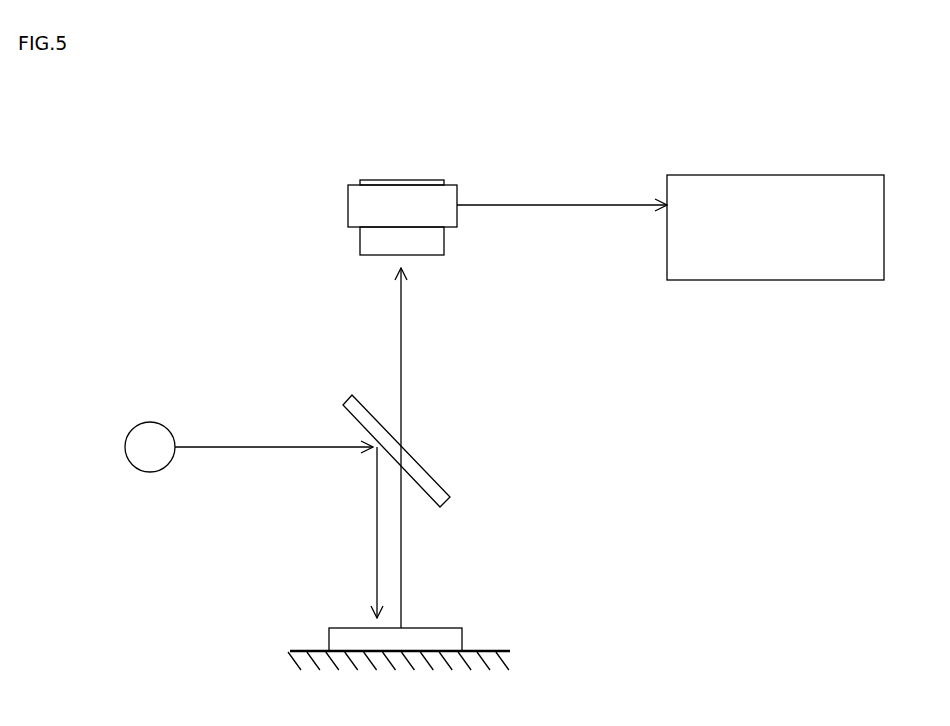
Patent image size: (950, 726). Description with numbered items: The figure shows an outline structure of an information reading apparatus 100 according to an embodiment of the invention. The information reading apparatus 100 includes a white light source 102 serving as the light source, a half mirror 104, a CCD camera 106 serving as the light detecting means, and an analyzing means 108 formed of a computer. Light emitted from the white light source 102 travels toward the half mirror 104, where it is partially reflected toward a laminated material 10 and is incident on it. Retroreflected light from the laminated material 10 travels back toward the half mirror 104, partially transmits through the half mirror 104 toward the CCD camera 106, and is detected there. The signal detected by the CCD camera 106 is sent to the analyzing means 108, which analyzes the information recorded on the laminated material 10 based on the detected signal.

The information reading apparatus 100 is at (175, 176).
The white light source 102 is at (140, 438).
The half mirror 104 is at (423, 476).
The CCD camera 106 is at (360, 207).
The analyzing means 108 is at (716, 268).
The laminated material 10 is at (458, 637).